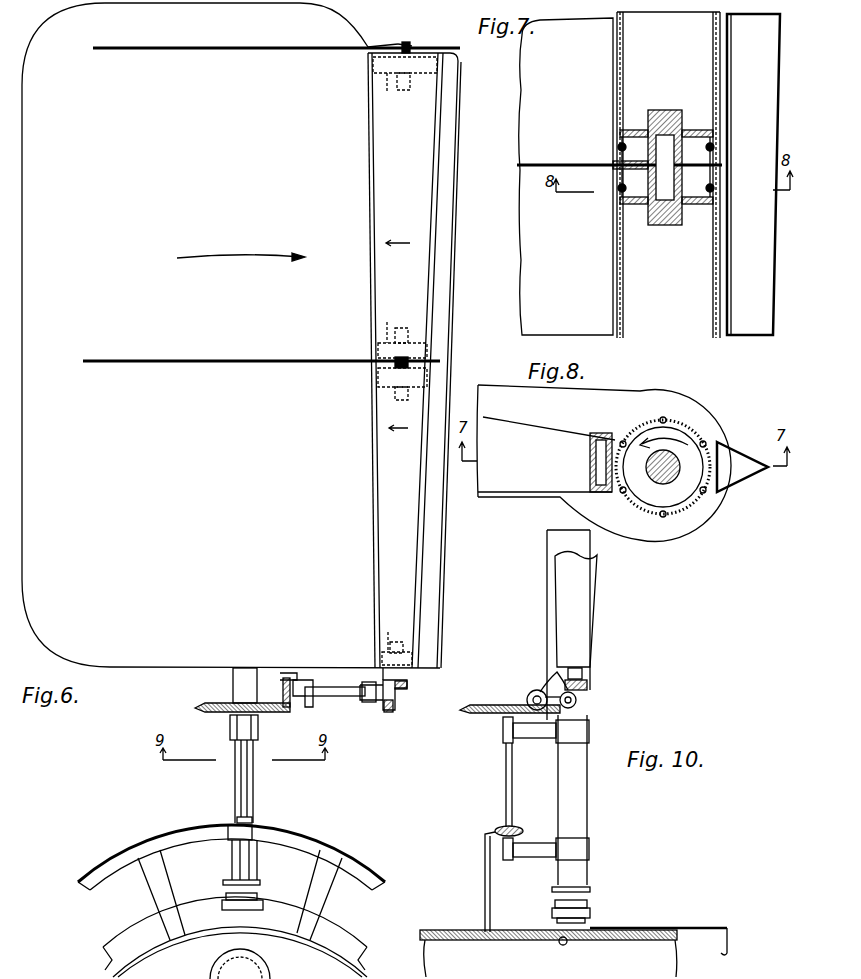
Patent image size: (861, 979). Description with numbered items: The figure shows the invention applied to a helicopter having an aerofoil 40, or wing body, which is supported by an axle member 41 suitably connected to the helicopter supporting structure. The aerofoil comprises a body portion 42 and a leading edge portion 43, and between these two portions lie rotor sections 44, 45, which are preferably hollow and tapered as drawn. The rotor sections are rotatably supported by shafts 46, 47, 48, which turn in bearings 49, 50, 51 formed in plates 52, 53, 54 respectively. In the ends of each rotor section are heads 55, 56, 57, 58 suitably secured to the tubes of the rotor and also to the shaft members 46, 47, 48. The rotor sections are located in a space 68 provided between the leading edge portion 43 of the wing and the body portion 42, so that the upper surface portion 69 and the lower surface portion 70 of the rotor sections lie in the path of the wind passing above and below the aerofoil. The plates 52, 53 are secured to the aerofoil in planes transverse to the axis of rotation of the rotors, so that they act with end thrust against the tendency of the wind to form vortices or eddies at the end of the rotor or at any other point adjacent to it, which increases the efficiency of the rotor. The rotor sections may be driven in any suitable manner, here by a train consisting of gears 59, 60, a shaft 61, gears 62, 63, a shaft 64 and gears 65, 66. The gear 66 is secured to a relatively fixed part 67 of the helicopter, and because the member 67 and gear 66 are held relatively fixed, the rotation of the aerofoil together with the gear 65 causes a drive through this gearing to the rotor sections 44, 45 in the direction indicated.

In FIG. 6, the aerofoil 40 is at (231, 335).
In FIG. 6, the axle member 41 is at (233, 686).
In FIG. 6, the body portion 42 is at (311, 149).
In FIG. 7, the body portion 42 is at (566, 176).
In FIG. 8, the body portion 42 is at (546, 441).
In FIG. 6, the leading edge portion 43 is at (453, 166).
In FIG. 7, the leading edge portion 43 is at (753, 174).
In FIG. 8, the leading edge portion 43 is at (746, 458).
In FIG. 6, the rotor section 44 is at (407, 360).
In FIG. 7, the rotor section 44 is at (668, 175).
In FIG. 6, the rotor section 45 is at (399, 474).
In FIG. 7, the rotor section 45 is at (668, 270).
In FIG. 8, the rotor section 45 is at (693, 430).
In FIG. 10, the rotor section 45 is at (590, 607).
In FIG. 6, the shaft 46 is at (406, 42).
In FIG. 6, the shaft 47 is at (404, 362).
In FIG. 7, the shaft 47 is at (671, 150).
In FIG. 8, the shaft 47 is at (660, 482).
In FIG. 6, the shaft 48 is at (400, 690).
In FIG. 10, the shaft 48 is at (585, 674).
In FIG. 6, the bearing 49 is at (412, 46).
In FIG. 6, the bearing 50 is at (400, 365).
In FIG. 6, the bearing 51 is at (385, 668).
In FIG. 6, the plate 52 is at (265, 52).
In FIG. 6, the plate 53 is at (228, 361).
In FIG. 7, the plate 53 is at (594, 163).
In FIG. 6, the plate 54 is at (430, 668).
In FIG. 6, the head 55 is at (398, 90).
In FIG. 6, the head 56 is at (402, 329).
In FIG. 7, the head 56 is at (636, 130).
In FIG. 6, the head 57 is at (402, 399).
In FIG. 7, the head 57 is at (646, 206).
In FIG. 6, the head 58 is at (397, 641).
In FIG. 6, the gear 59 is at (410, 684).
In FIG. 10, the gear 59 is at (590, 688).
In FIG. 6, the gear 60 is at (390, 712).
In FIG. 10, the gear 60 is at (578, 704).
In FIG. 6, the shaft 61 is at (340, 698).
In FIG. 10, the shaft 61 is at (548, 688).
In FIG. 6, the gear 62 is at (283, 686).
In FIG. 10, the gear 62 is at (529, 695).
In FIG. 6, the gear 63 is at (270, 713).
In FIG. 10, the gear 63 is at (472, 714).
In FIG. 6, the shaft 64 is at (250, 786).
In FIG. 10, the shaft 64 is at (506, 776).
In FIG. 6, the gear 65 is at (258, 823).
In FIG. 10, the gear 65 is at (561, 830).
In FIG. 6, the gear 66 is at (300, 834).
In FIG. 10, the gear 66 is at (495, 832).
In FIG. 6, the relatively fixed part 67 is at (358, 967).
In FIG. 10, the relatively fixed part 67 is at (450, 930).
In FIG. 10, the space 68 is at (668, 928).
In FIG. 8, the upper surface portion 69 is at (668, 420).
In FIG. 8, the lower surface portion 70 is at (662, 516).